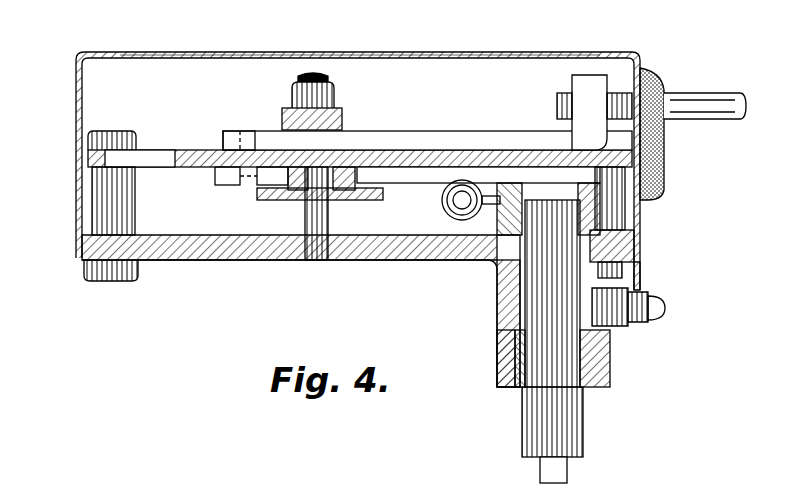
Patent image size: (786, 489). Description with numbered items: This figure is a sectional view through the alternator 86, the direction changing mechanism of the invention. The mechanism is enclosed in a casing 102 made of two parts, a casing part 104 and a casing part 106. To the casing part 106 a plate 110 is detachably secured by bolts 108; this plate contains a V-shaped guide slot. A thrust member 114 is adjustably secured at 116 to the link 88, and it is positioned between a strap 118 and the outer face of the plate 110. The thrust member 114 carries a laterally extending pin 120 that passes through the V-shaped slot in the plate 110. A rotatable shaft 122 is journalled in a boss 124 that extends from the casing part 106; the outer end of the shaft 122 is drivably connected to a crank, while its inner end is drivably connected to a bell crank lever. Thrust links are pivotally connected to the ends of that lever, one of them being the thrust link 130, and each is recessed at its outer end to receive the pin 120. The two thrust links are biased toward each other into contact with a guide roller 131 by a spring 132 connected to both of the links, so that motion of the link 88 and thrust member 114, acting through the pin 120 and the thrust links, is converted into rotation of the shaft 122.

The alternator 86 is at (472, 53).
The link 88 is at (694, 93).
The casing 102 is at (247, 47).
The casing part 104 is at (340, 53).
The casing part 106 is at (250, 260).
The bolts 108 is at (100, 218).
The plate 110 is at (470, 158).
The thrust member 114 is at (408, 135).
The adjustable securing point 116 is at (586, 78).
The strap 118 is at (334, 118).
The pin 120 is at (255, 130).
The rotatable shaft 122 is at (535, 386).
The boss 124 is at (500, 324).
The thrust link 130 is at (420, 182).
The guide roller 131 is at (296, 196).
The spring 132 is at (466, 218).